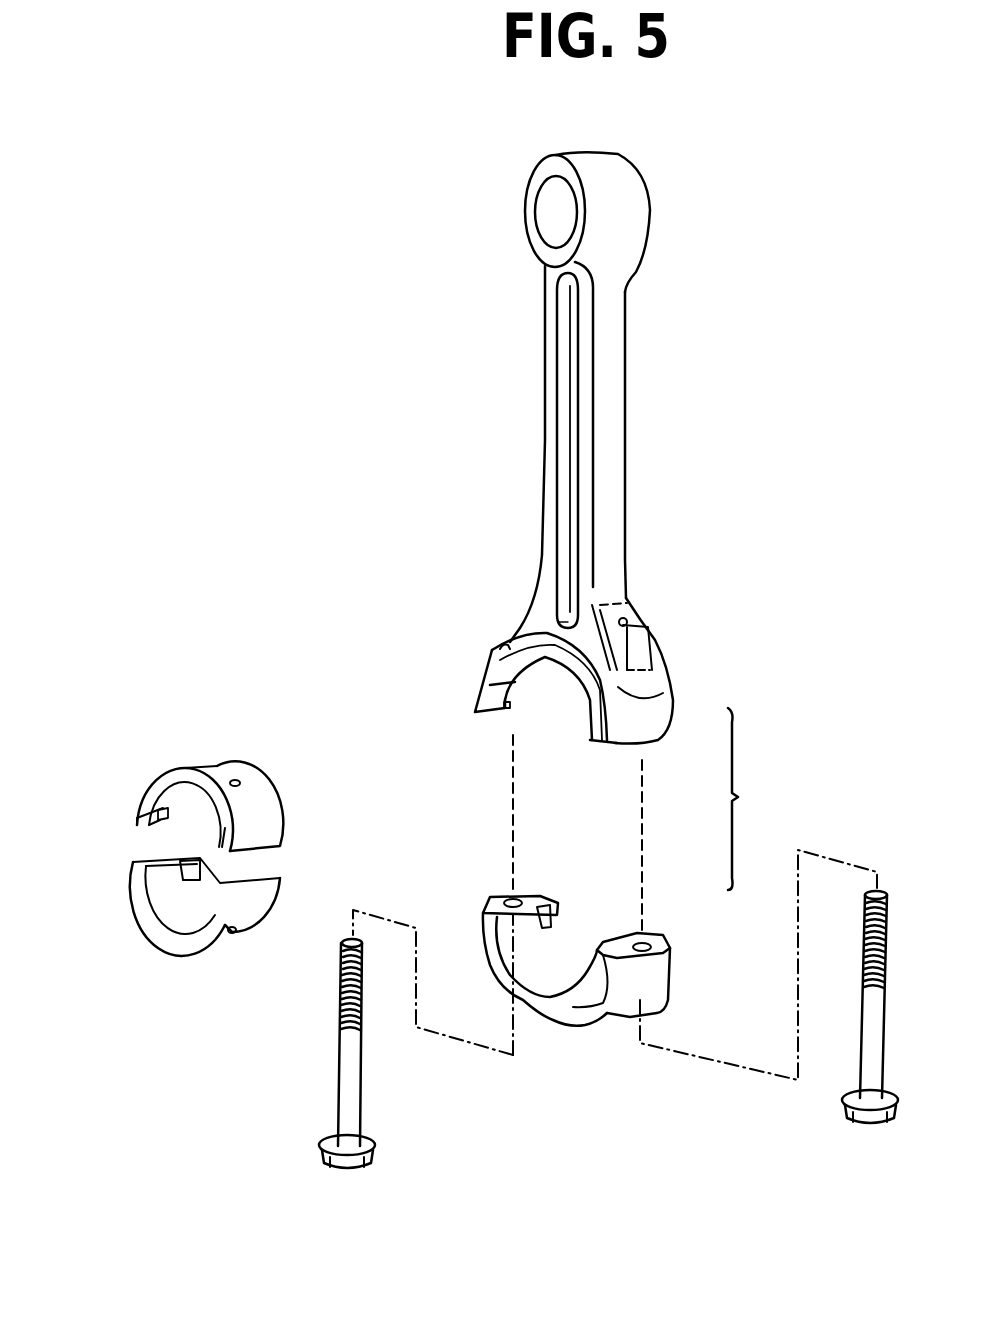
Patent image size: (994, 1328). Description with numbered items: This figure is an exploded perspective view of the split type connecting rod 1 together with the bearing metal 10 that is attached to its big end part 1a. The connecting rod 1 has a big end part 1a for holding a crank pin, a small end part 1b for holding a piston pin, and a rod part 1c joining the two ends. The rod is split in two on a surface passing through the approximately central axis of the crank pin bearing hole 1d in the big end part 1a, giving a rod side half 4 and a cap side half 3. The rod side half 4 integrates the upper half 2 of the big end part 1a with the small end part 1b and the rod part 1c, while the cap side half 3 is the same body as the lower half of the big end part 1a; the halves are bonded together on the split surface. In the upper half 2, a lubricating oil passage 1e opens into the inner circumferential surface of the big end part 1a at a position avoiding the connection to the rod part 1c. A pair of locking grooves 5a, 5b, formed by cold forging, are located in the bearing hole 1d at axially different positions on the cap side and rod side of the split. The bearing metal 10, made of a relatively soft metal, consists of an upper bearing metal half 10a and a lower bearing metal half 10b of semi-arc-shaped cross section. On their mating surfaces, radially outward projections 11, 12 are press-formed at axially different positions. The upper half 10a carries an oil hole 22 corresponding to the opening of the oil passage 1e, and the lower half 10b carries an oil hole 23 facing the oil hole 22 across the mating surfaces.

The split type connecting rod 1 is at (408, 374).
The big end part 1a is at (749, 799).
The small end part 1b is at (655, 210).
The rod part 1c is at (622, 493).
The crank pin bearing hole 1d is at (490, 680).
The lubricating oil passage 1e is at (628, 616).
The upper half of the big end part 2 is at (674, 712).
The cap side half 3 is at (668, 935).
The rod side half 4 is at (628, 427).
The locking groove 5a is at (537, 905).
The locking groove 5b is at (505, 714).
The bearing metal 10 is at (65, 802).
The upper bearing metal half 10a is at (134, 812).
The lower bearing metal half 10b is at (148, 910).
The projection 11 is at (162, 814).
The projection 12 is at (200, 870).
The oil hole 22 is at (240, 783).
The oil hole 23 is at (232, 935).